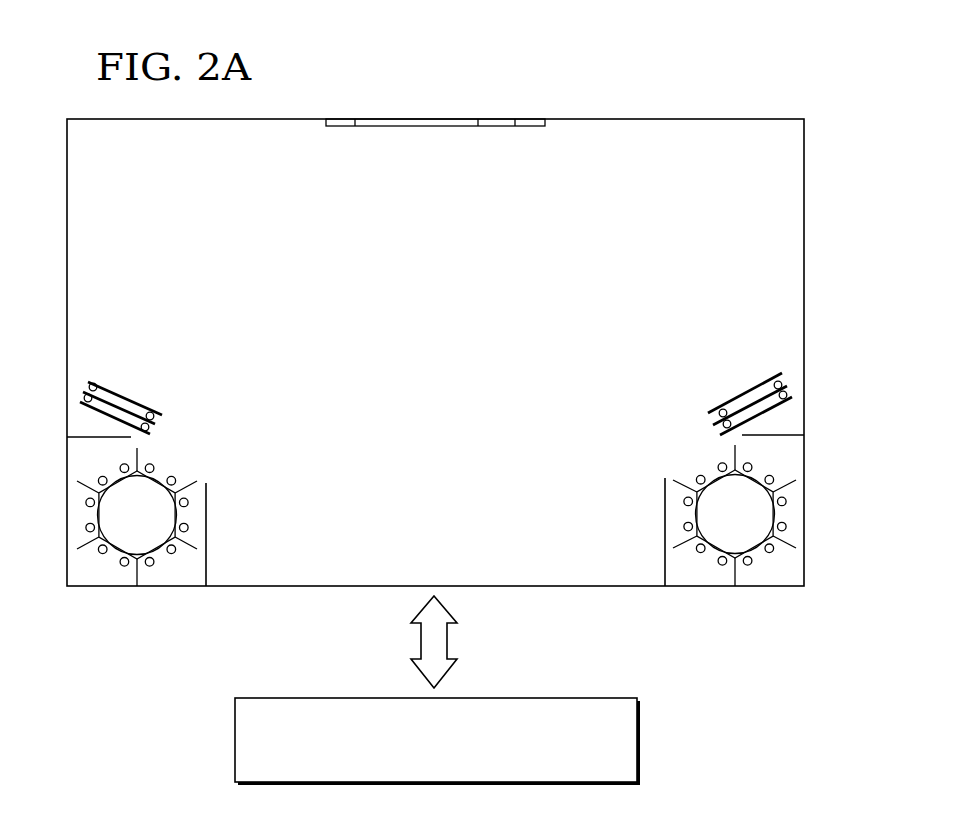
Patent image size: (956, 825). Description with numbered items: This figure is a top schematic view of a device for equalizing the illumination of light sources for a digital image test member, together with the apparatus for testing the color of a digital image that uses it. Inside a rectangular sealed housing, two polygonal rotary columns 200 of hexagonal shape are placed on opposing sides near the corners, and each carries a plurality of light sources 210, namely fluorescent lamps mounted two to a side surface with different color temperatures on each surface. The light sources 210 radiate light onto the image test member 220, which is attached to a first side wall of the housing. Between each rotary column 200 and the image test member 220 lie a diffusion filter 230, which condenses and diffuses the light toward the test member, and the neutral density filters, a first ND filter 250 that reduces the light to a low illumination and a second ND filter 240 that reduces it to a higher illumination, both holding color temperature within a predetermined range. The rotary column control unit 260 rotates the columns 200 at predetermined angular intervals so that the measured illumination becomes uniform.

The polygonal rotary column 200 is at (737, 558).
The light source 210 is at (786, 502).
The image test member 220 is at (478, 120).
The diffusion filter 230 is at (115, 389).
The second ND filter 240 is at (156, 424).
The first ND filter 250 is at (150, 435).
The rotary column control unit 260 is at (568, 698).